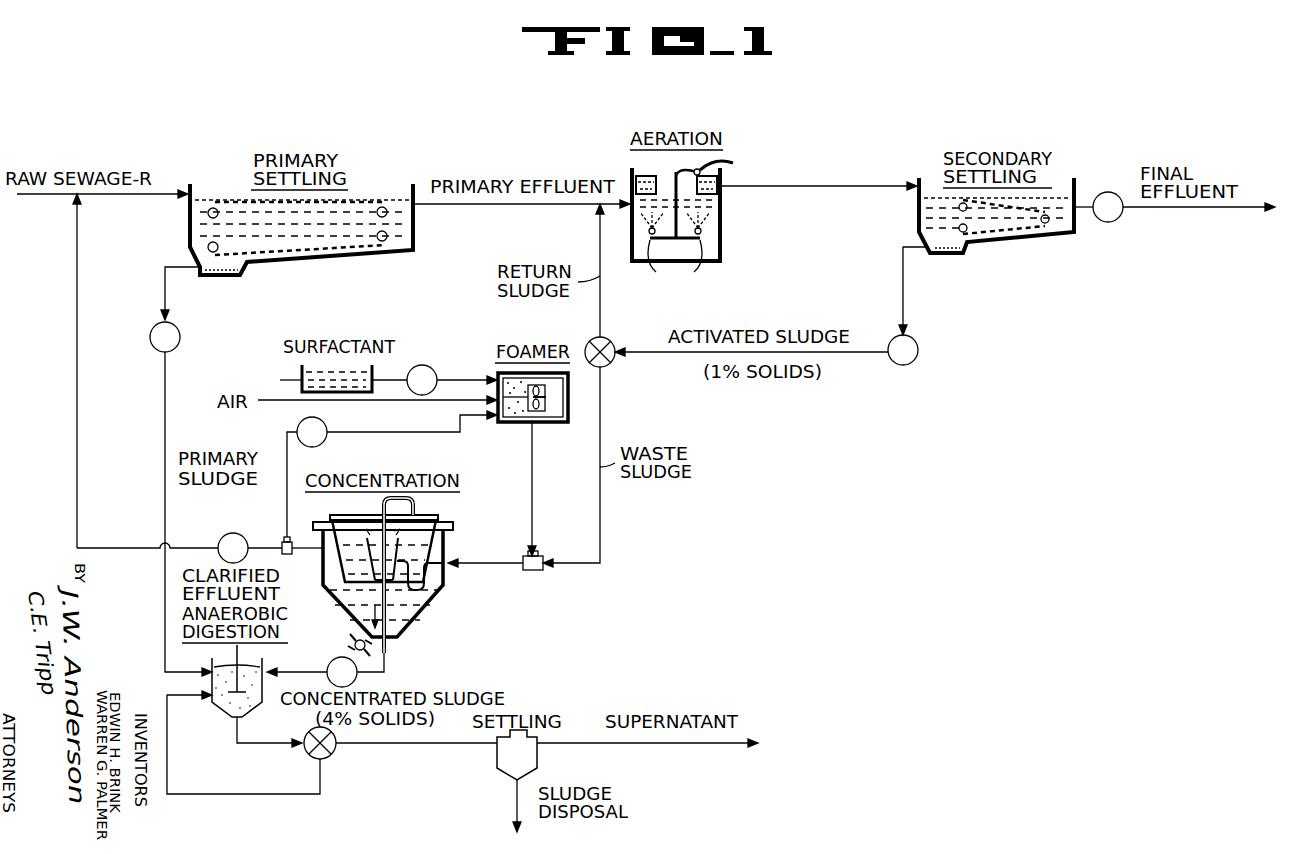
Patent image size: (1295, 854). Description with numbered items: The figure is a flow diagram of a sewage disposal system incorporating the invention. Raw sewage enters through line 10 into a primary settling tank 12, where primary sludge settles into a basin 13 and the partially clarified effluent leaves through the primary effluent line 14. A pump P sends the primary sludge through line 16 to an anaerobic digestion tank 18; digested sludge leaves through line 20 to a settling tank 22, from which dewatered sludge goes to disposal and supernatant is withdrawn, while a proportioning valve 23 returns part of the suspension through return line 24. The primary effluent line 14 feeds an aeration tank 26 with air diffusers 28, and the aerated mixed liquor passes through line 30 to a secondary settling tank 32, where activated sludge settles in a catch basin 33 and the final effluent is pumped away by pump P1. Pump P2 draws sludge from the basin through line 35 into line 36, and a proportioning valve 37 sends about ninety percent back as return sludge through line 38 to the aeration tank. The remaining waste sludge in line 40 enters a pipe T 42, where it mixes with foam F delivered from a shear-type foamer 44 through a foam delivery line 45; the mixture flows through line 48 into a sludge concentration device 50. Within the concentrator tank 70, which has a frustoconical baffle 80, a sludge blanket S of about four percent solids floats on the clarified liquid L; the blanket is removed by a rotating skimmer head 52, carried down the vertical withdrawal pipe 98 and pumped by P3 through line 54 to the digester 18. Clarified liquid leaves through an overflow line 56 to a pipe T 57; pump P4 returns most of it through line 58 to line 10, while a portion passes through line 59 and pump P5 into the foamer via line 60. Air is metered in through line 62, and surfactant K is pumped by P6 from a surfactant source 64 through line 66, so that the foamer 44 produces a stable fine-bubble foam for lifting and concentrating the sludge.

The line 10 is at (137, 196).
The primary settling tank 12 is at (187, 230).
The basin 13 is at (222, 277).
The primary effluent line 14 is at (486, 206).
The line 16 is at (165, 415).
The anaerobic digestion tank 18 is at (232, 708).
The line 20 is at (262, 749).
The settling tank 22 is at (497, 760).
The proportioning valve 23 is at (333, 757).
The return line 24 is at (167, 760).
The aeration tank 26 is at (722, 205).
The air diffusers 28 is at (675, 263).
The line 30 is at (850, 186).
The secondary settling tank 32 is at (917, 215).
The catch basin 33 is at (950, 257).
The line 35 is at (905, 292).
The line 36 is at (660, 355).
The proportioning valve 37 is at (609, 343).
The line 38 is at (603, 300).
The line 40 is at (603, 508).
The pipe T 42 is at (535, 570).
The shear-type foamer 44 is at (575, 425).
The foam delivery line 45 is at (532, 480).
The line 48 is at (486, 568).
The sludge concentration device 50 is at (458, 527).
The rotating skimmer head 52 is at (433, 513).
The line 54 is at (303, 672).
The overflow line 56 is at (302, 552).
The pipe T 57 is at (283, 542).
The line 58 is at (77, 456).
The line 59 is at (287, 500).
The line 60 is at (355, 434).
The line 62 is at (280, 403).
The surfactant source 64 is at (274, 378).
The line 66 is at (453, 380).
The tank 70 is at (432, 607).
The frustoconical baffle 80 is at (343, 580).
The vertical withdrawal pipe 98 is at (395, 632).
The pump P is at (155, 338).
The pump P1 is at (1103, 222).
The pump P2 is at (918, 350).
The pump P3 is at (357, 678).
The pump P4 is at (230, 548).
The pump P5 is at (322, 425).
The pump P6 is at (426, 365).
The surfactant K is at (305, 367).
The foam F is at (517, 415).
The sludge blanket S is at (345, 515).
The clarified liquid L is at (415, 553).